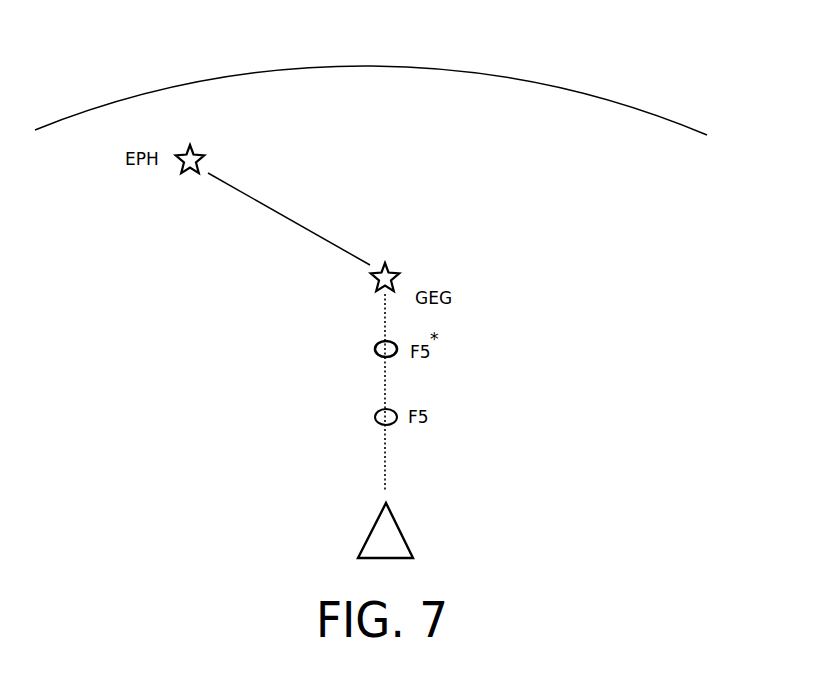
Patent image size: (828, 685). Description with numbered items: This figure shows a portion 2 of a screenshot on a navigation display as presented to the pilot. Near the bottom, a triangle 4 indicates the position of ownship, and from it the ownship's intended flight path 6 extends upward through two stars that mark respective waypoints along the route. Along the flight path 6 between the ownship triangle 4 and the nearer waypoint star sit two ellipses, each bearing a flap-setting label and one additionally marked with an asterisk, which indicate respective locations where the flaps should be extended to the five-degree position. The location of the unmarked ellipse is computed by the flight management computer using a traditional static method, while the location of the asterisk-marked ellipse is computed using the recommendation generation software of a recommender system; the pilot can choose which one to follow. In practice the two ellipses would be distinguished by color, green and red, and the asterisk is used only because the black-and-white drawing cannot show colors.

The portion of a screenshot 2 is at (611, 96).
The triangle 4 is at (396, 525).
The intended flight path 6 is at (385, 308).